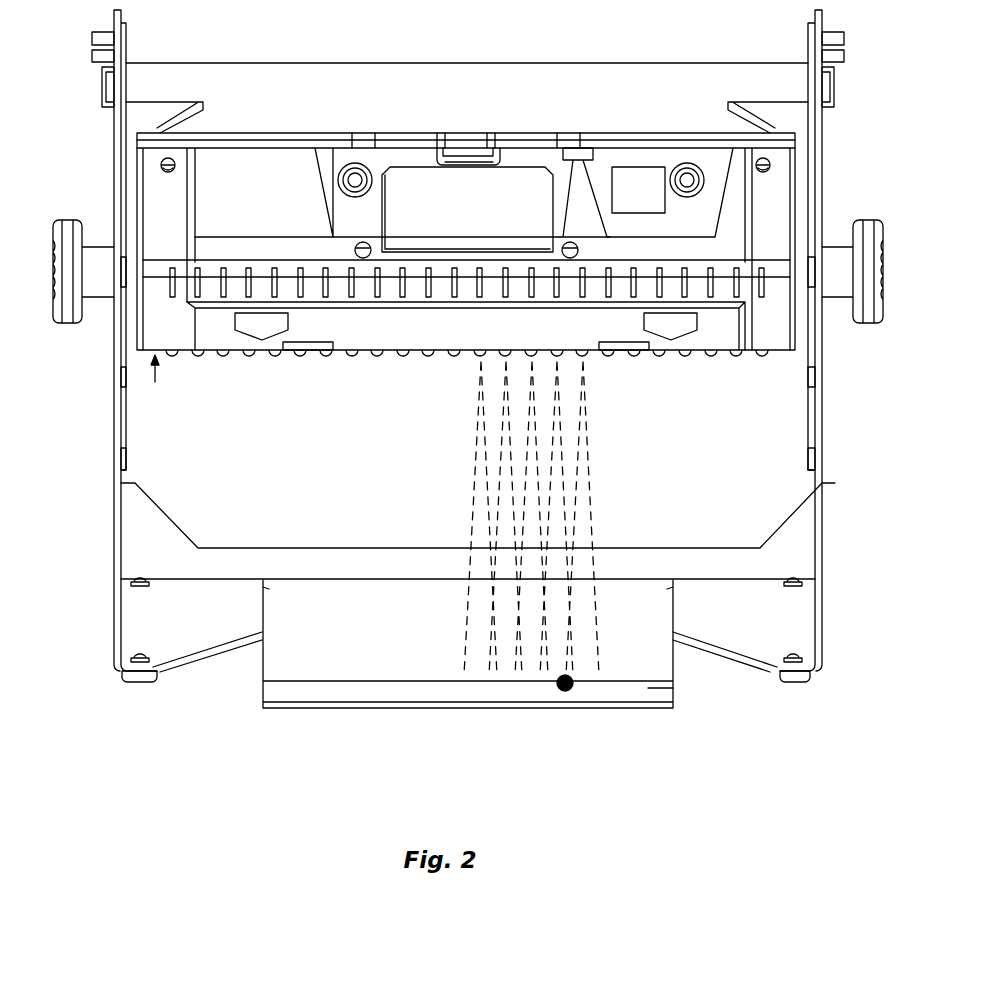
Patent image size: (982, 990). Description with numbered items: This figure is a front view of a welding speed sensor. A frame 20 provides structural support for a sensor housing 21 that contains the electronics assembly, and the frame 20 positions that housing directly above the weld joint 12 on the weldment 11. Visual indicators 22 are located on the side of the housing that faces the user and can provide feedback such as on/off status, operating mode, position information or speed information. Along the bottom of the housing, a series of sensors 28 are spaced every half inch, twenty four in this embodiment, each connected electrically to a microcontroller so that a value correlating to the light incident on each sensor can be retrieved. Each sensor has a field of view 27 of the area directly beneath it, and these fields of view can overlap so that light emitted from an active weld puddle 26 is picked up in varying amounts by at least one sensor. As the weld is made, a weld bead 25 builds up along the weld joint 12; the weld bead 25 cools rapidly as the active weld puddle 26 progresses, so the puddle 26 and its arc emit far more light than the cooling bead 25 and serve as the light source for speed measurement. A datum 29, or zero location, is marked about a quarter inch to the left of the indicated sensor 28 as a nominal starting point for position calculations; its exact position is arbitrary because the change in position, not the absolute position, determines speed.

The frame 20 is at (112, 163).
The sensor housing 21 is at (333, 133).
The visual indicators 22 is at (762, 268).
The sensors 28 is at (197, 358).
The datum 29 is at (155, 372).
The field of view 27 is at (610, 628).
The weld joint 12 is at (335, 683).
The weld bead 25 is at (648, 690).
The active weld puddle 26 is at (566, 690).
The weldment 11 is at (258, 655).